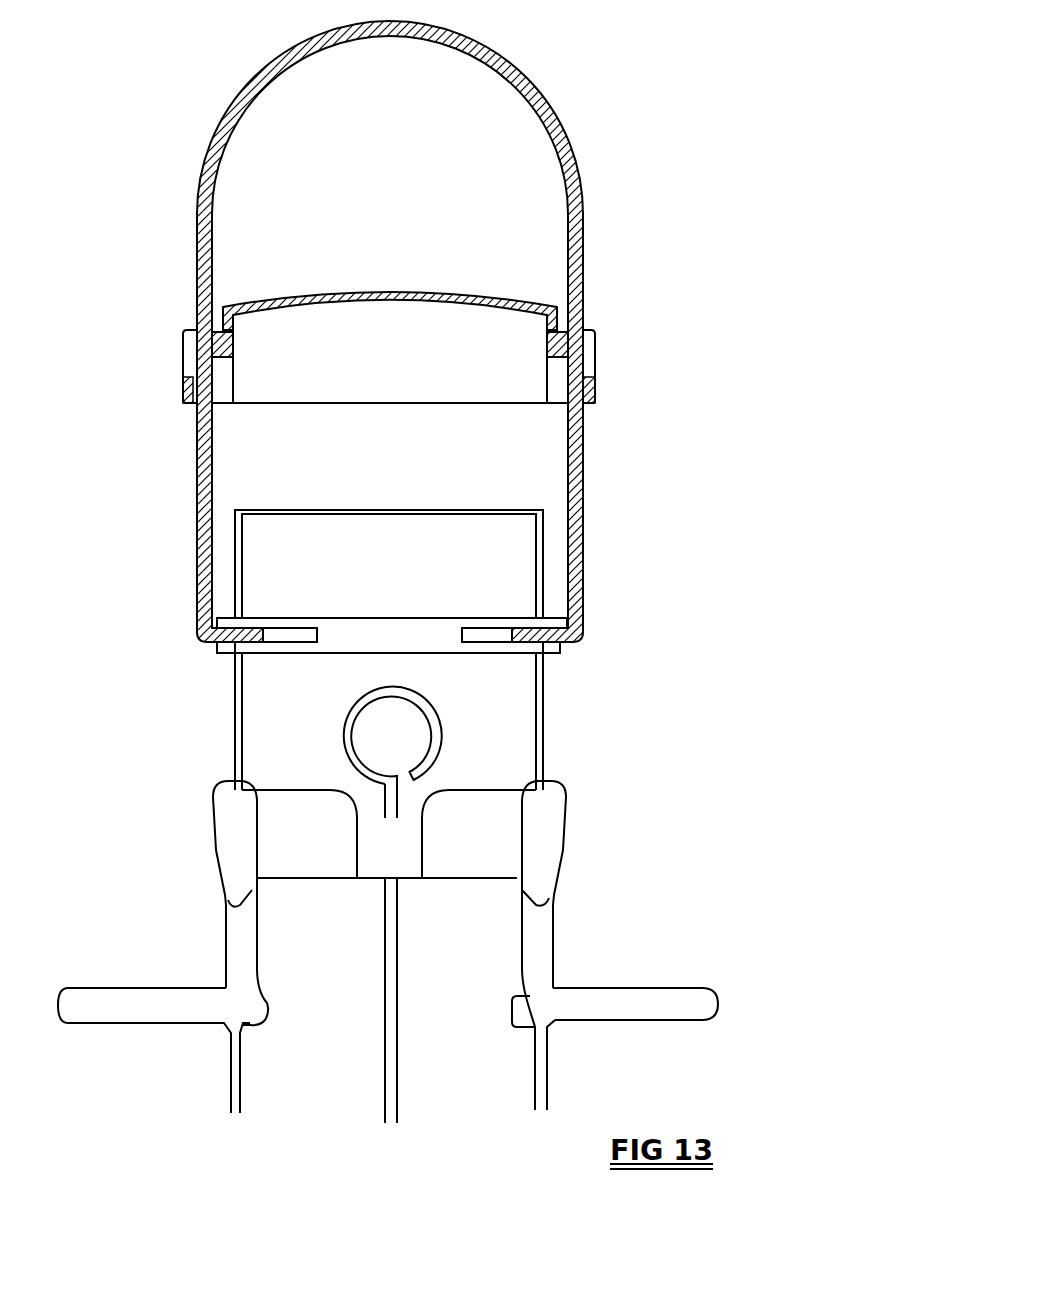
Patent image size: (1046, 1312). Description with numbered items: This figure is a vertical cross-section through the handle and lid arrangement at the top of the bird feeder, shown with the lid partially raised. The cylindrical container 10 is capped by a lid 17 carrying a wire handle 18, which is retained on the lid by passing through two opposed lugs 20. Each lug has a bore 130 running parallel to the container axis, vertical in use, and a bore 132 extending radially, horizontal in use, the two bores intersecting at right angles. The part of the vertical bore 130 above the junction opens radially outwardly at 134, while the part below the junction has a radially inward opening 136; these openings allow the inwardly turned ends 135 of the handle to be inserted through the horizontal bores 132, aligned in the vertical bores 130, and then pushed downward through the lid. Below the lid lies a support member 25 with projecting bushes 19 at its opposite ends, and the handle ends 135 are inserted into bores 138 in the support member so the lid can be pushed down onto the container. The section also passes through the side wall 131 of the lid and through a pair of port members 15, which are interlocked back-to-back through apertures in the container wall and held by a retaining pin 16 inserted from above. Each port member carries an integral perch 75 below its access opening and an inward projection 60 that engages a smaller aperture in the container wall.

The handle 18 is at (568, 146).
The lid 17 is at (397, 290).
The bore 130 is at (563, 332).
The radially outward opening 134 is at (591, 335).
The bore 132 is at (592, 373).
The lug 20 is at (597, 392).
The radially inward opening 136 is at (556, 390).
The side wall of dome 131 is at (197, 495).
The support member 25 is at (386, 628).
The bore 138 is at (489, 633).
The projecting bush 19 is at (556, 650).
The inwardly turned end 135 is at (228, 648).
The cylindrical container 10 is at (545, 728).
The retaining pin 16 is at (442, 726).
The port member 15 is at (546, 942).
The inward projection 60 is at (523, 1015).
The perch 75 is at (612, 1008).